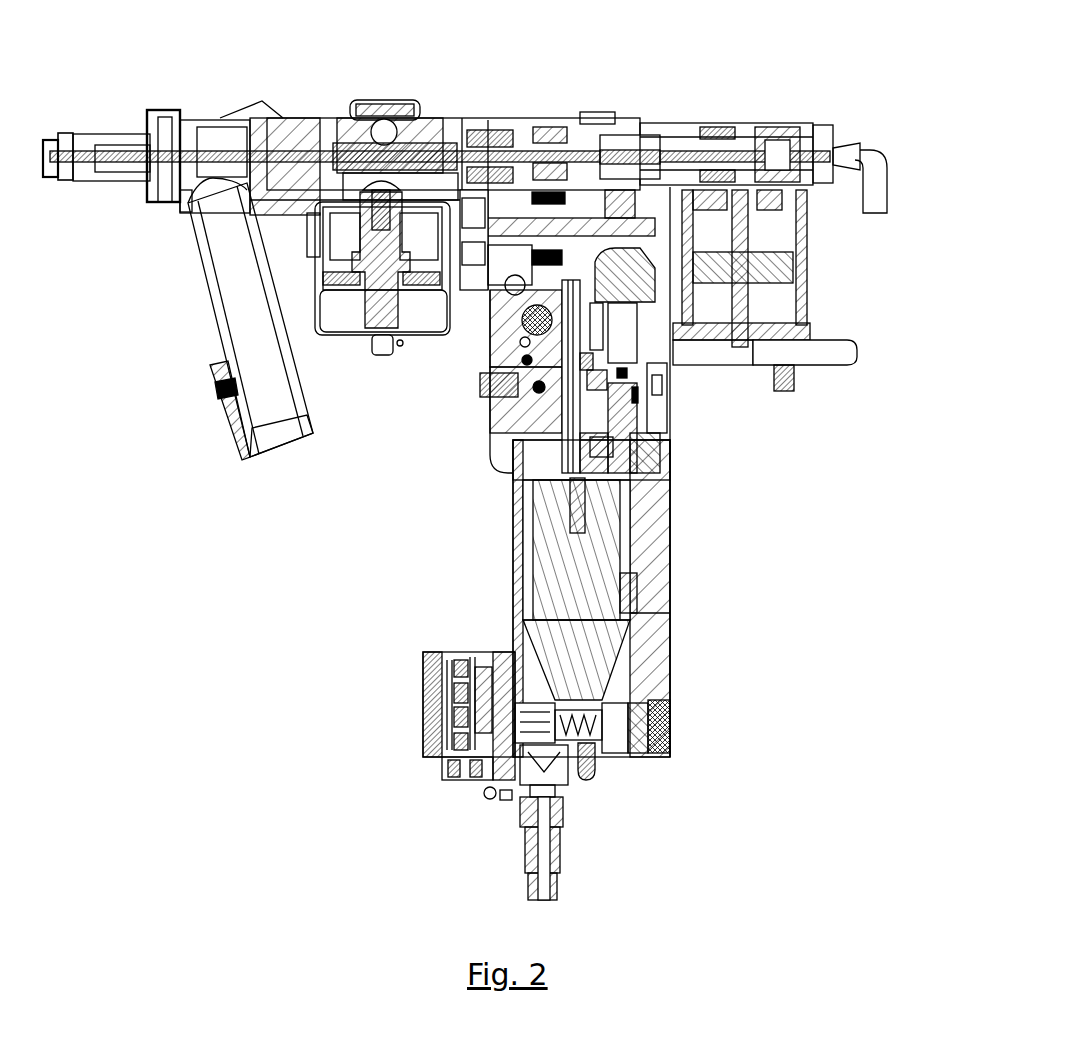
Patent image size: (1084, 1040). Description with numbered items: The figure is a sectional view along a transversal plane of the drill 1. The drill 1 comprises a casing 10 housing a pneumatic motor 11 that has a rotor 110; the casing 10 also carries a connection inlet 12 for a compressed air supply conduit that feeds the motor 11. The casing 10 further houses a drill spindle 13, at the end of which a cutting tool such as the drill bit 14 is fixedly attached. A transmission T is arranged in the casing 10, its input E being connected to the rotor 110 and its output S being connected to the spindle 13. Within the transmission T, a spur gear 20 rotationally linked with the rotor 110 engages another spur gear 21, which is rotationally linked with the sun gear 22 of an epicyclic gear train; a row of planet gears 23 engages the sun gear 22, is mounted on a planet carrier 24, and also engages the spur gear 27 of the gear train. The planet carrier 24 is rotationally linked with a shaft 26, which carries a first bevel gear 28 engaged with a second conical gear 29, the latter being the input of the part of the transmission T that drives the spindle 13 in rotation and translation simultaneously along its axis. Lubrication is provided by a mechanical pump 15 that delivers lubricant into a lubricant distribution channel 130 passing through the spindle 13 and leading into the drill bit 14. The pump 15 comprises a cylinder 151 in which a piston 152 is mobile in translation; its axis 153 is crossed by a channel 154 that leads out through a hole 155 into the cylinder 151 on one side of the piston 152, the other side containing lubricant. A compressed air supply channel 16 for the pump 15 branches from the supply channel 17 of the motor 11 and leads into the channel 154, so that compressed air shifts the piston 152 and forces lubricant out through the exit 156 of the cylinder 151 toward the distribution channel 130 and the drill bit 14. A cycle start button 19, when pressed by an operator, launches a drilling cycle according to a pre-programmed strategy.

The drill 1 is at (822, 104).
The casing 10 is at (652, 497).
The motor 11 is at (625, 603).
The rotor 110 is at (592, 640).
The connection inlet 12 is at (545, 855).
The drill spindle 13 is at (447, 152).
The lubricant distribution channel 130 is at (400, 112).
The drill bit 14 is at (193, 152).
The mechanical pump 15 is at (822, 258).
The cylinder 151 is at (790, 324).
The piston 152 is at (770, 253).
The axis 153 is at (738, 328).
The channel 154 is at (800, 340).
The hole 155 is at (737, 225).
The exit 156 is at (797, 380).
The compressed air supply channel 16 is at (585, 400).
The supply channel 17 is at (558, 753).
The cycle start button 19 is at (422, 733).
The spur gear 20 is at (585, 436).
The spur gear 21 is at (668, 445).
The sun gear 22 is at (646, 400).
The planet gears 23 is at (600, 412).
The planet carrier 24 is at (565, 428).
The shaft 26 is at (625, 365).
The spur gear 27 is at (560, 377).
The first bevel gear 28 is at (660, 205).
The second conical gear 29 is at (628, 215).
The output S is at (586, 110).
The transmission T is at (682, 318).
The input E is at (680, 460).